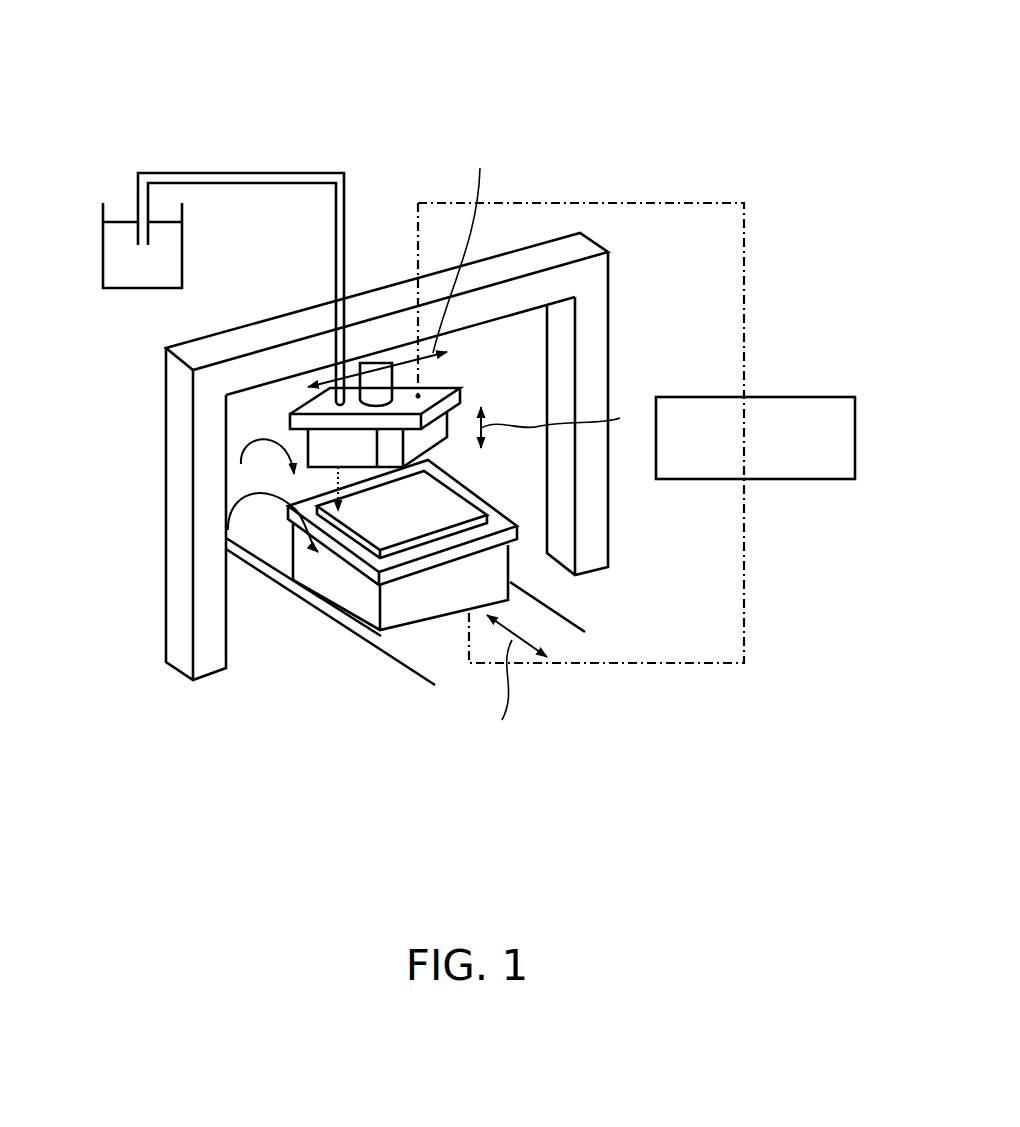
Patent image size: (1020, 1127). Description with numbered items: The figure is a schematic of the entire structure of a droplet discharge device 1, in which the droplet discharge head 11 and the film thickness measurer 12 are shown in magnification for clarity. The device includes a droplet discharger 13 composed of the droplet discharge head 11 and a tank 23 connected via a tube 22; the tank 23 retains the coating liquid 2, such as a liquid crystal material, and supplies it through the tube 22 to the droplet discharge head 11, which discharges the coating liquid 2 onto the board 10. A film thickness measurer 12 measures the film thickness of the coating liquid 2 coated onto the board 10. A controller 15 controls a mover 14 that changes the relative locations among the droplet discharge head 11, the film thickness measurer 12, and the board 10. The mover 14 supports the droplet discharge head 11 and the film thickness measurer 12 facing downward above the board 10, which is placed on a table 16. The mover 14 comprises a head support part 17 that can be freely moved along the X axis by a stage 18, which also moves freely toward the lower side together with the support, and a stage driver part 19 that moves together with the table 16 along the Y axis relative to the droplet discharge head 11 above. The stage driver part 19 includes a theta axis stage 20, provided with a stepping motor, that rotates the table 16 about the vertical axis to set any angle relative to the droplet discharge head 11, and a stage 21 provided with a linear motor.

The droplet discharge device 1 is at (380, 147).
The coating liquid 2 is at (182, 258).
The board 10 is at (380, 530).
The droplet discharge head 11 is at (307, 453).
The film thickness measurer 12 is at (443, 428).
The droplet discharger 13 is at (275, 415).
The mover 14 is at (285, 598).
The controller 15 is at (856, 440).
The table 16 is at (502, 517).
The head support part 17 is at (369, 382).
The stage 18 is at (177, 530).
The stage driver part 19 is at (405, 640).
The theta axis stage 20 is at (358, 612).
The stage 21 is at (420, 663).
The tube 22 is at (243, 173).
The tank 23 is at (103, 249).